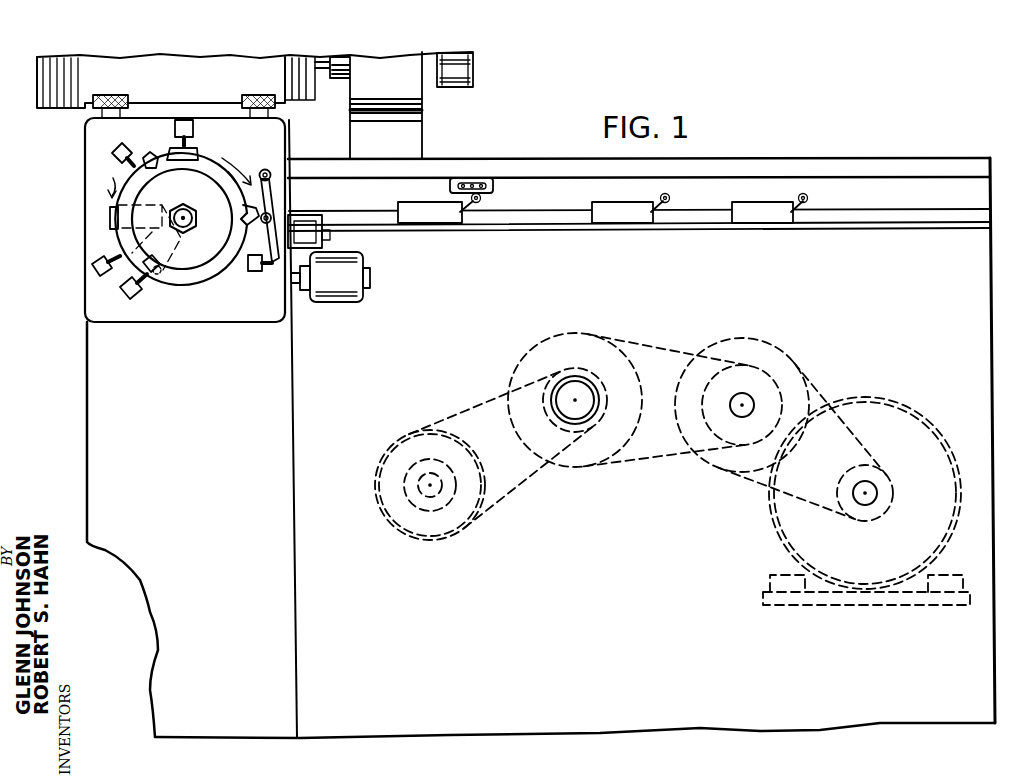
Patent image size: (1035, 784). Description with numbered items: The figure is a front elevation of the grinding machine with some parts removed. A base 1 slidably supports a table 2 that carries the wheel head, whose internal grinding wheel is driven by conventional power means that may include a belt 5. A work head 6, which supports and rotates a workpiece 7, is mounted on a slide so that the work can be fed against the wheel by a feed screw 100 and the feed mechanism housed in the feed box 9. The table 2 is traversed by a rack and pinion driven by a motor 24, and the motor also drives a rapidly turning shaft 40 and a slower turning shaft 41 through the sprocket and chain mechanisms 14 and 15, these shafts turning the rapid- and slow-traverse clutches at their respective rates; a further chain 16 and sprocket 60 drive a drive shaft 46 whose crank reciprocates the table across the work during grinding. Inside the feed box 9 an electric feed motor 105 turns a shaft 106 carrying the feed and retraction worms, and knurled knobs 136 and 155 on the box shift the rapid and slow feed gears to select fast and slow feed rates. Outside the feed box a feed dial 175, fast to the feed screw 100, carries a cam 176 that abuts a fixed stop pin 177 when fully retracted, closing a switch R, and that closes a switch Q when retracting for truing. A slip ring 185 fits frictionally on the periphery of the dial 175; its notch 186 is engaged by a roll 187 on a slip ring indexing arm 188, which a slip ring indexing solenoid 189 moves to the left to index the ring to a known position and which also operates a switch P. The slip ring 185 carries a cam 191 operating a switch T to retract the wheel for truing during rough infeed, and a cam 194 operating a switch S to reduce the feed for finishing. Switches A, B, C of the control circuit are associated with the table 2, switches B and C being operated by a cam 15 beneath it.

The base 1 is at (992, 272).
The table 2 is at (860, 164).
The belt 5 is at (474, 71).
The work head 6 is at (190, 78).
The workpiece 7 is at (314, 102).
The feed box 9 is at (133, 322).
The sprocket and chain mechanism 14 is at (823, 396).
The sprocket and chain mechanism 15 is at (478, 178).
The chain 16 is at (486, 403).
The motor 24 is at (922, 412).
The rapidly turning shaft 40 is at (744, 402).
The slower turning shaft 41 is at (582, 400).
The drive shaft 46 is at (426, 486).
The sprocket 60 is at (400, 452).
The feed screw 100 is at (181, 209).
The electric feed motor 105 is at (639, 235).
The shaft 106 is at (296, 284).
The knurled knob 136 is at (95, 108).
The knurled knob 155 is at (237, 101).
The feed dial 175 is at (201, 283).
The cam 176 is at (110, 216).
The fixed stop pin 177 is at (170, 239).
The slip ring 185 is at (221, 163).
The notch 186 is at (199, 219).
The roll 187 is at (245, 207).
The slip ring indexing arm 188 is at (290, 181).
The slip ring indexing solenoid 189 is at (303, 219).
The cam 191 is at (152, 154).
The cam 194 is at (172, 146).
The switch A is at (437, 218).
The switch B is at (630, 214).
The switch C is at (773, 216).
The switch P is at (255, 273).
The switch Q is at (92, 265).
The switch R is at (121, 292).
The switch S is at (194, 128).
The switch T is at (112, 152).